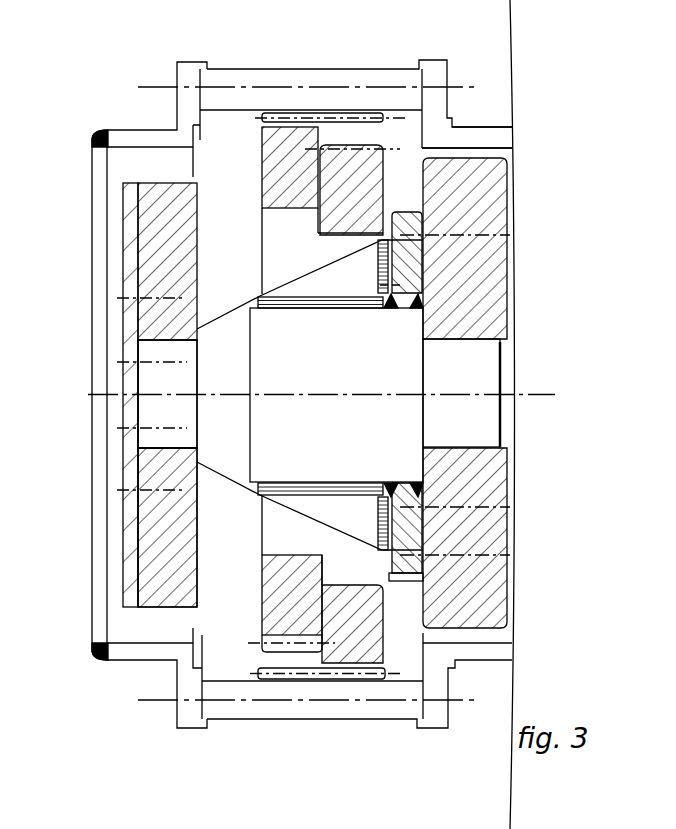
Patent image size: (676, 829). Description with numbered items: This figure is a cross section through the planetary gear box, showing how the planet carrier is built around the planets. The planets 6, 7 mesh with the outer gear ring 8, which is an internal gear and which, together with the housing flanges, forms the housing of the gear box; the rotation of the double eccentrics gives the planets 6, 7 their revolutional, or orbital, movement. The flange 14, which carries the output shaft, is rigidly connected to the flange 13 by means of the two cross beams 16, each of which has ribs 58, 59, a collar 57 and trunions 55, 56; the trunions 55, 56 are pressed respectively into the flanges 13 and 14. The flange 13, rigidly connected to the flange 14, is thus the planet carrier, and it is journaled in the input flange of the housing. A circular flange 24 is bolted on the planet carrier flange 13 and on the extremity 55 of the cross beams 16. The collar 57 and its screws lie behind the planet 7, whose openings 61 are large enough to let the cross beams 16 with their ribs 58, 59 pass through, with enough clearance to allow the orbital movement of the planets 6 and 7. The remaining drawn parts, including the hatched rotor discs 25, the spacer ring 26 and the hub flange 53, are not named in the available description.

The planet 6 is at (280, 155).
The planet 7 is at (424, 142).
The outer gear ring 8 is at (348, 100).
The flange 13 is at (163, 565).
The flange 14 is at (473, 202).
The cross beams 16 is at (356, 342).
The circular flange 24 is at (129, 545).
The rotor disc 25 is at (153, 298).
The spacer ring 26 is at (153, 362).
The hub flange 53 is at (457, 450).
The trunion 55 is at (158, 383).
The trunion 56 is at (465, 378).
The collar 57 is at (407, 563).
The rib 58 is at (326, 510).
The rib 59 is at (320, 288).
The openings 61 is at (290, 556).